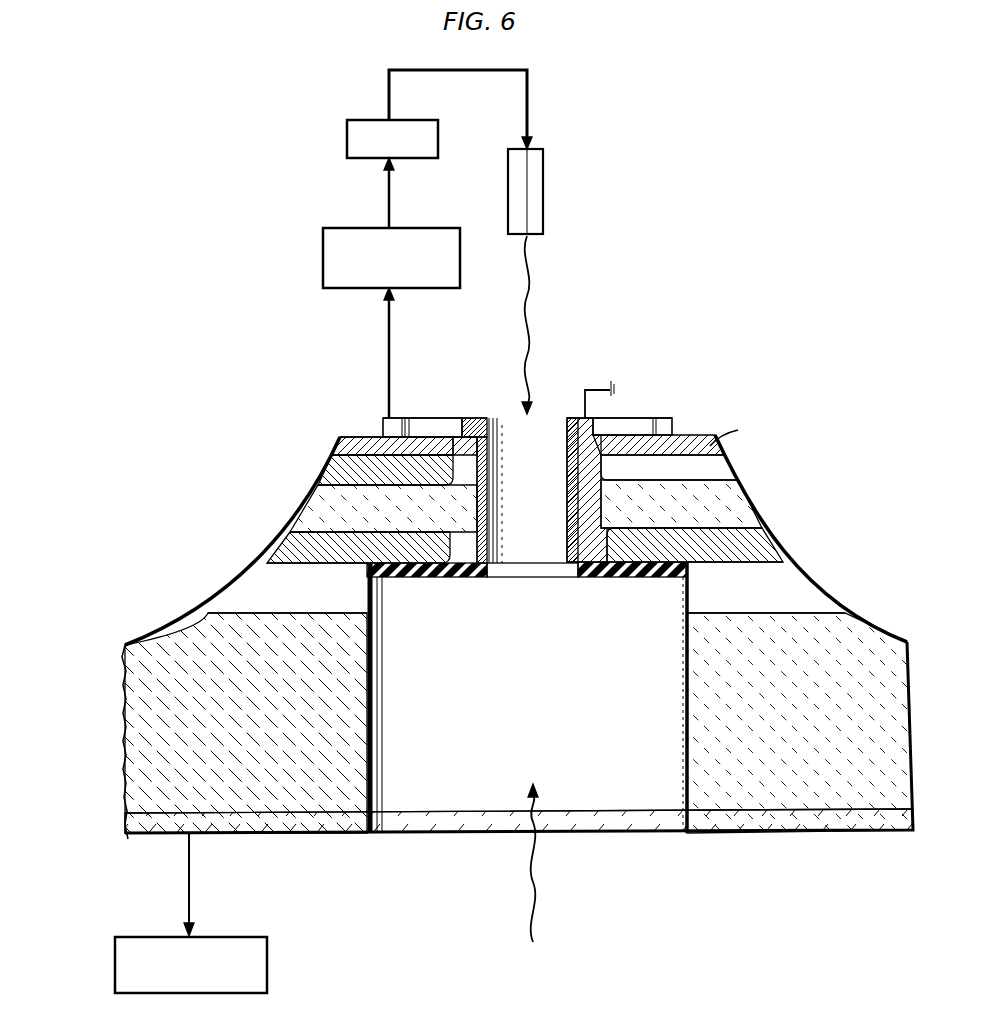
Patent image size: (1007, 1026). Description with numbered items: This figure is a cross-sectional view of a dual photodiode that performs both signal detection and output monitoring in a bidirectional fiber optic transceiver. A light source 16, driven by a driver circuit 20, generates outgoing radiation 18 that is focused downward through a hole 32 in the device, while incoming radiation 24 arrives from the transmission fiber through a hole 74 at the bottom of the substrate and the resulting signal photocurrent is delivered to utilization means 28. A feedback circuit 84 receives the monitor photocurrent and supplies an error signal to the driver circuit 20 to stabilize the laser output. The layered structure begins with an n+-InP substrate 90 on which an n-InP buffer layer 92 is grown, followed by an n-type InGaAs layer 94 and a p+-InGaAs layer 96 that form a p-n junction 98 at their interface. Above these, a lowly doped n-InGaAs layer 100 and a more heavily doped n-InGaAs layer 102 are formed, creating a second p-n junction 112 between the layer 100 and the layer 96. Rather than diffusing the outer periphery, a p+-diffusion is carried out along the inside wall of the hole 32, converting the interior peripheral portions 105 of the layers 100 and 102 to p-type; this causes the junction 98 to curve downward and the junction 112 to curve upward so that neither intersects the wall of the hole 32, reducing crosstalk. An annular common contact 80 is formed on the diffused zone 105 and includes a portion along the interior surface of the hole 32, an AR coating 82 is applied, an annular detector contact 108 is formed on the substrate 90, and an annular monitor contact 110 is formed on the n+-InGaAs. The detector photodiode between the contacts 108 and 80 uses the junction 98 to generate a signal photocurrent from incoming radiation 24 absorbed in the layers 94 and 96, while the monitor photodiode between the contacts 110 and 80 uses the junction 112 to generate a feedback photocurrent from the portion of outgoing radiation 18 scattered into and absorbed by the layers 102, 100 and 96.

The light source 16 is at (543, 193).
The outgoing radiation 18 is at (532, 330).
The driver circuit 20 is at (363, 120).
The incoming radiation 24 is at (538, 902).
The utilization means 28 is at (227, 937).
The hole 32 is at (517, 419).
The hole for the transmission fiber 74 is at (636, 800).
The common contact 80 is at (567, 513).
The AR coating 82 is at (648, 577).
The feedback circuit 84 is at (352, 228).
The n+-InP substrate 90 is at (842, 632).
The n-InP buffer layer 92 is at (795, 580).
The n-InGaAs layer 94 is at (768, 550).
The p+-InGaAs layer 96 is at (735, 512).
The p-n junction 98 is at (752, 535).
The n-InGaAs layer 100 is at (716, 466).
The n-InGaAs layer 102 is at (690, 440).
The interior peripheral portions 105 is at (580, 457).
The detector contact 108 is at (270, 834).
The monitor contact 110 is at (383, 433).
The p-n junction 112 is at (724, 487).